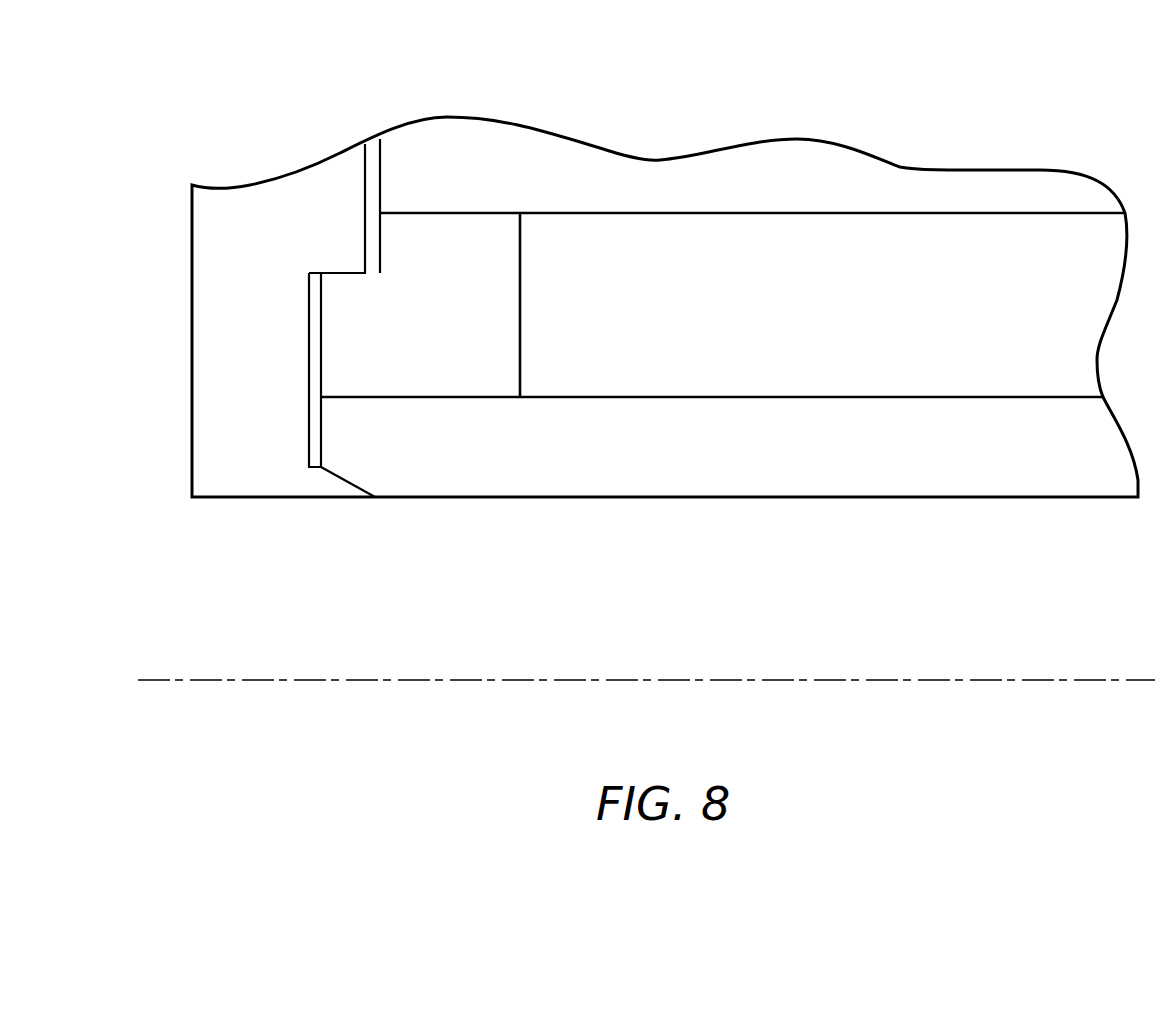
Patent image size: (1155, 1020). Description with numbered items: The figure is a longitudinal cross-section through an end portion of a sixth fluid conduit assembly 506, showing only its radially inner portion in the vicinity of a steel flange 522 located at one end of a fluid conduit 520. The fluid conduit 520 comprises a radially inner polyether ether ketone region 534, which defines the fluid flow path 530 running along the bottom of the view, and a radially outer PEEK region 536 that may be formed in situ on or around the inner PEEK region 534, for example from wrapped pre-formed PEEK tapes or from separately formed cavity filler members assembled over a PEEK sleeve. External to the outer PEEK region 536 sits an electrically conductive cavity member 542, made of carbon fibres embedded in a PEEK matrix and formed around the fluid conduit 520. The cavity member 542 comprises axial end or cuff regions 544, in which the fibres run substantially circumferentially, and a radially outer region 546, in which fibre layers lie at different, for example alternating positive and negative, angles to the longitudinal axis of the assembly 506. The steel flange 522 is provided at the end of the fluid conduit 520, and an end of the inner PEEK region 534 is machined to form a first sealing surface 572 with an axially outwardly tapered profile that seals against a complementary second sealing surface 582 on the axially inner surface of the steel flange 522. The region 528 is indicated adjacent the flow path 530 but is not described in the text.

The sixth fluid conduit assembly 506 is at (454, 711).
The fluid conduit 520 is at (843, 637).
The steel flange 522 is at (215, 255).
The combustion chamber 528 is at (203, 599).
The fluid flow path 530 is at (687, 739).
The inner PEEK region 534 is at (905, 467).
The outer PEEK region 536 is at (913, 255).
The cavity member 542 is at (374, 106).
The cuff regions 544 is at (338, 335).
The radially outer region 546 is at (663, 177).
The first sealing surface 572 is at (348, 416).
The second sealing surface 582 is at (343, 480).